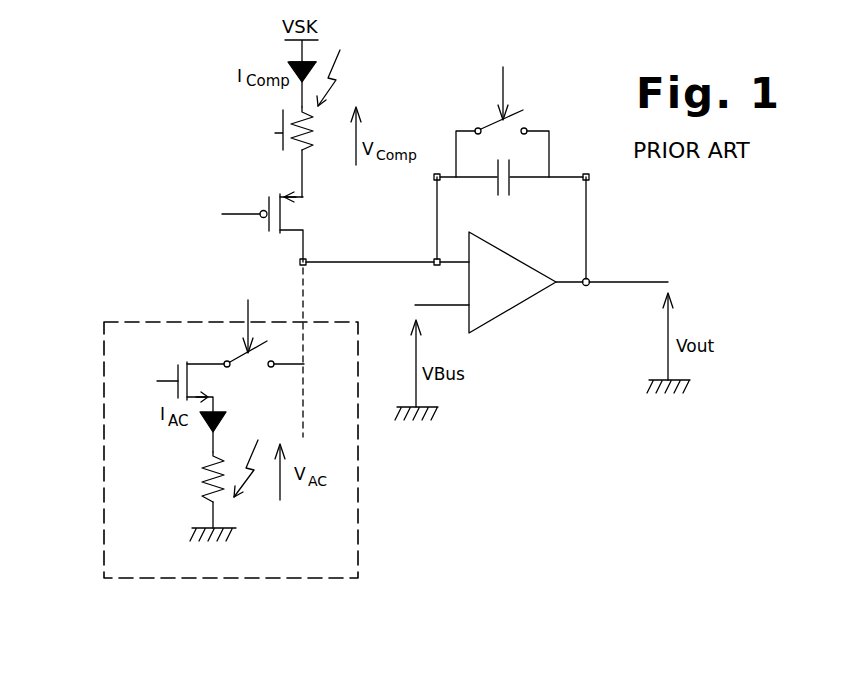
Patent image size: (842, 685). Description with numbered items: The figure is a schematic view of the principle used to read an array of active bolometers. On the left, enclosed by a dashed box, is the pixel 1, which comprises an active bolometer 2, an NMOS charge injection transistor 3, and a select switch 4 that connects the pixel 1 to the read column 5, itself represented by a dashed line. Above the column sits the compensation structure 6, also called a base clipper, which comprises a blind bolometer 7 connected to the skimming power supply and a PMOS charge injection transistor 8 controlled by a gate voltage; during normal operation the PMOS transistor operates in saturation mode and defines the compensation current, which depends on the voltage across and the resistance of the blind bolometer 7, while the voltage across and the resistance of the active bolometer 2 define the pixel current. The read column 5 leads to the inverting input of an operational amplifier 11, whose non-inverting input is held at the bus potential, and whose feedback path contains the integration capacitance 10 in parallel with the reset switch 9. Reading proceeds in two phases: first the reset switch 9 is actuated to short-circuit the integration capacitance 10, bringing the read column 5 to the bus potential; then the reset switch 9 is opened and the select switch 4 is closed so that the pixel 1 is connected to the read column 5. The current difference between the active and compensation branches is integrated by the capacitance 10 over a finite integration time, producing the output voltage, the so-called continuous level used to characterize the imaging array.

The pixel 1 is at (117, 432).
The active bolometer 2 is at (210, 490).
The NMOS charge injection transistor 3 is at (197, 364).
The switch 4 is at (246, 351).
The read column 5 is at (305, 297).
The compensation structure 6 is at (228, 92).
The blind bolometer 7 is at (310, 150).
The PMOS charge injection transistor 8 is at (266, 206).
The reset switch 9 is at (490, 120).
The integration capacitance 10 is at (508, 184).
The operational amplifier 11 is at (515, 294).